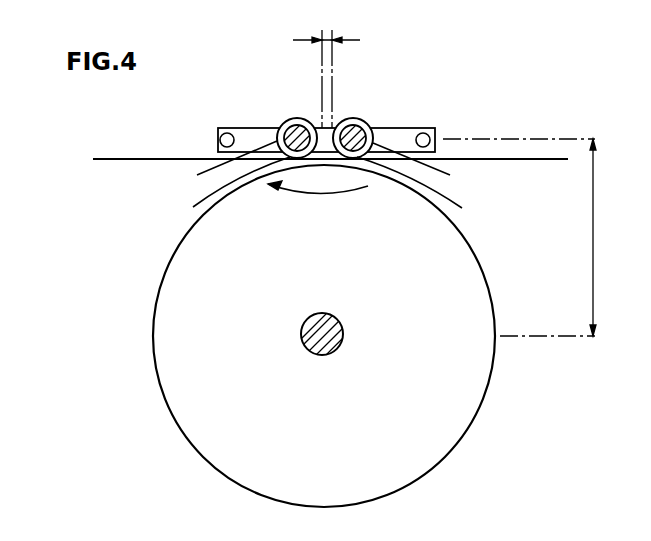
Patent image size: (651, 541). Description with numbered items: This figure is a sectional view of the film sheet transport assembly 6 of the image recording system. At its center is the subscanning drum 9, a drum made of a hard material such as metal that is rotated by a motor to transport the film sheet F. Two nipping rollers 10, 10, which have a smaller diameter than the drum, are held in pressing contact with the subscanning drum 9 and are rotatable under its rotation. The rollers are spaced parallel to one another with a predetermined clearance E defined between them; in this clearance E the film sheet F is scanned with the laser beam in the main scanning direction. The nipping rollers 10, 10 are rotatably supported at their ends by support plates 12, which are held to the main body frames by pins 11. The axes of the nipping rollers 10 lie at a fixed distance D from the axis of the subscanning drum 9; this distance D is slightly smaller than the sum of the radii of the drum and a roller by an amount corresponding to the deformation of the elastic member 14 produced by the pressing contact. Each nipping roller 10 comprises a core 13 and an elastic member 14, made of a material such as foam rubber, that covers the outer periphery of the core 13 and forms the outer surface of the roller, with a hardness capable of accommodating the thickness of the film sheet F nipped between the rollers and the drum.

The roller assembly 6 is at (459, 79).
The subscanning drum 9 is at (467, 387).
The nipping roller 10 is at (296, 118).
The pin 11 is at (222, 128).
The support plate 12 is at (250, 133).
The core 13 is at (331, 192).
The elastic member 14 is at (324, 165).
The distance D is at (528, 237).
The clearance E is at (326, 68).
The film sheet F is at (128, 158).